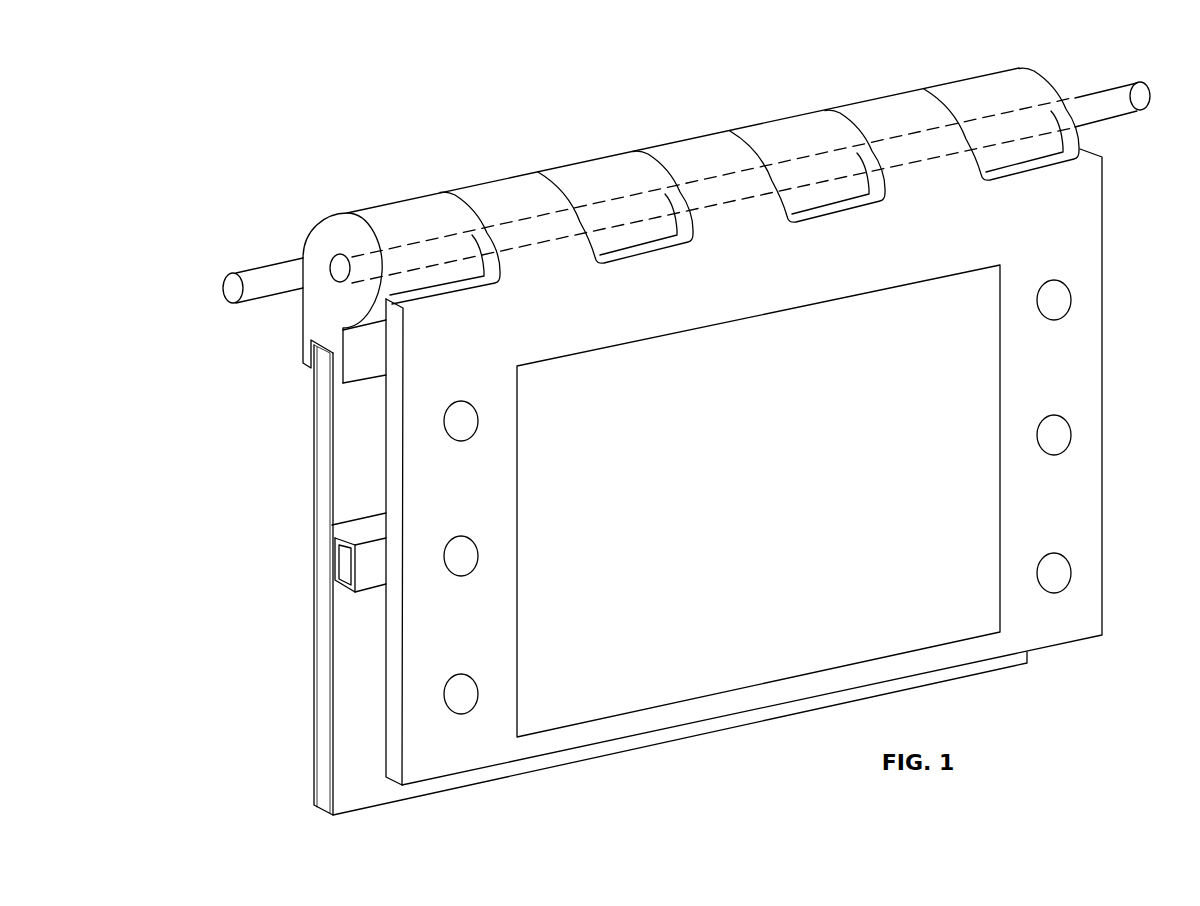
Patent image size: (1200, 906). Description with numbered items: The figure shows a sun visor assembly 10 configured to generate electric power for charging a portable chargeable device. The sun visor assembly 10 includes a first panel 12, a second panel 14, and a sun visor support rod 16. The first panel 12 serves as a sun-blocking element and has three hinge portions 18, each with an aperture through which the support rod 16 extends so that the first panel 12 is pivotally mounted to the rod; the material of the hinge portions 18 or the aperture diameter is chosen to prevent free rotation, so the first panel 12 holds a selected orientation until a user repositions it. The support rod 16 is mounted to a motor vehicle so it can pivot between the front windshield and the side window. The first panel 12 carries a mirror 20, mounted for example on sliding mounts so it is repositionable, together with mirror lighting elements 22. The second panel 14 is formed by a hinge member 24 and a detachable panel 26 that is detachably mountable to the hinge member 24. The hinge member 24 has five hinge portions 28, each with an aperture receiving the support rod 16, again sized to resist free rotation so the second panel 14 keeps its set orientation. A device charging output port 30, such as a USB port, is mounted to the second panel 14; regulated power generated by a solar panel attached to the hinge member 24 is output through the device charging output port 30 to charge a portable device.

The sun visor assembly 10 is at (352, 124).
The first panel 12 is at (1103, 235).
The second panel 14 is at (262, 507).
The sun visor support rod 16 is at (282, 262).
The hinge portions 18 is at (492, 192).
The mirror 20 is at (777, 522).
The mirror lighting elements 22 is at (478, 415).
The hinge member 24 is at (300, 325).
The detachable panel 26 is at (322, 655).
The hinge portions 28 is at (400, 213).
The device charging output port 30 is at (320, 567).